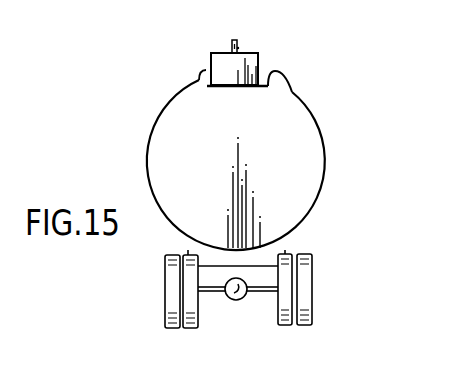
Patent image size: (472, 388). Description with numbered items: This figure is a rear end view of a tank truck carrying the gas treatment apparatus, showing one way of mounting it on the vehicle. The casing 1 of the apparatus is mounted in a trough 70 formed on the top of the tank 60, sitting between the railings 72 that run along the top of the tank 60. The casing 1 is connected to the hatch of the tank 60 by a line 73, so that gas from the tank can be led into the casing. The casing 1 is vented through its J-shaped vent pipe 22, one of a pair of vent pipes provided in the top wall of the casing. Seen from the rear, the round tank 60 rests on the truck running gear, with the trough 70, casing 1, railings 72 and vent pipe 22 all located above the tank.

The casing 1 is at (312, 59).
The vent pipe 22 is at (243, 46).
The tank 60 is at (297, 171).
The trough 70 is at (205, 85).
The railings 72 is at (199, 79).
The line 73 is at (235, 40).